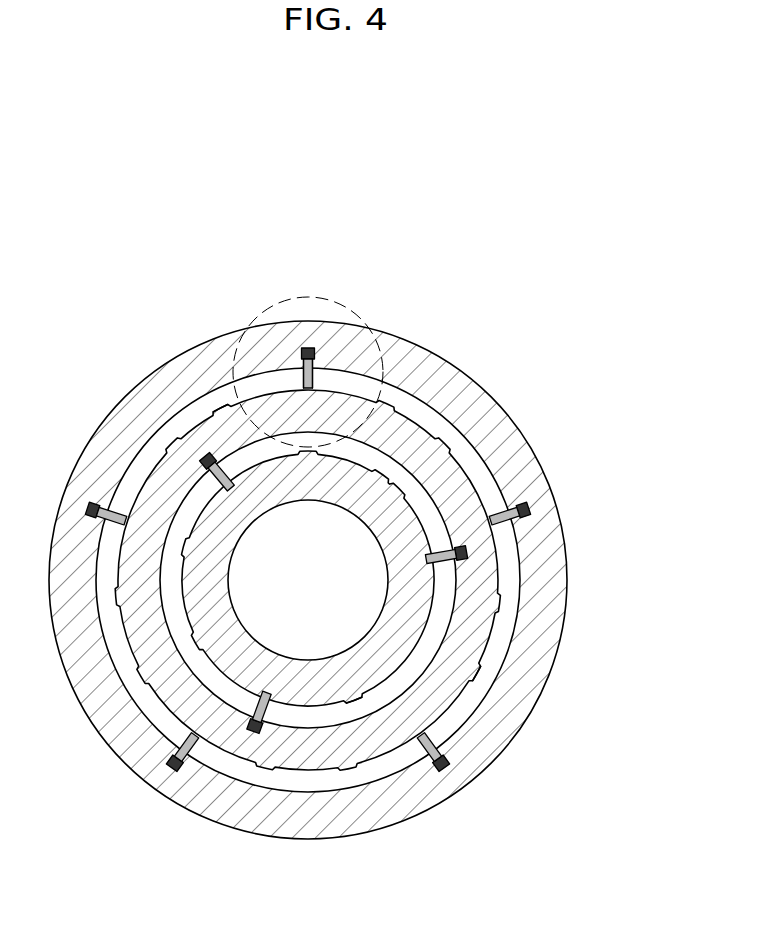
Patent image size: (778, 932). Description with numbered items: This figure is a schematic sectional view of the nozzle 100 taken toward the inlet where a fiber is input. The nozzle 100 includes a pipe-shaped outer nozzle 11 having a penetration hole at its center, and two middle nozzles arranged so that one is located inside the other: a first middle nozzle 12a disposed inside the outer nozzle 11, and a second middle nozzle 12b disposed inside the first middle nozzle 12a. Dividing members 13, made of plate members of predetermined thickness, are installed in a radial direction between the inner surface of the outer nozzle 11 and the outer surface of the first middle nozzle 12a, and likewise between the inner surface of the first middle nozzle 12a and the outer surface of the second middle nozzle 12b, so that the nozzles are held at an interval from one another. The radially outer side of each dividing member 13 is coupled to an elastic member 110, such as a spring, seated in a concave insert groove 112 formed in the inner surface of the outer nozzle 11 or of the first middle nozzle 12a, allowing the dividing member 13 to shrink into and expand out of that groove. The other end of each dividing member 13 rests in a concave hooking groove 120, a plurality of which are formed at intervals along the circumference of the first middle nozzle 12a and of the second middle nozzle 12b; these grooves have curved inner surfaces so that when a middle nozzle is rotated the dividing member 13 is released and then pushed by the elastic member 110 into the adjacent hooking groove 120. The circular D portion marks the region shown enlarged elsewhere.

The nozzle 100 is at (120, 236).
The outer nozzle 11 is at (513, 447).
The first middle nozzle 12a is at (483, 570).
The second middle nozzle 12b is at (298, 677).
The dividing member 13 is at (335, 377).
The elastic member 110 is at (308, 348).
The insert groove 112 is at (297, 377).
The hooking groove 120 is at (263, 366).
The circular D portion D is at (340, 300).